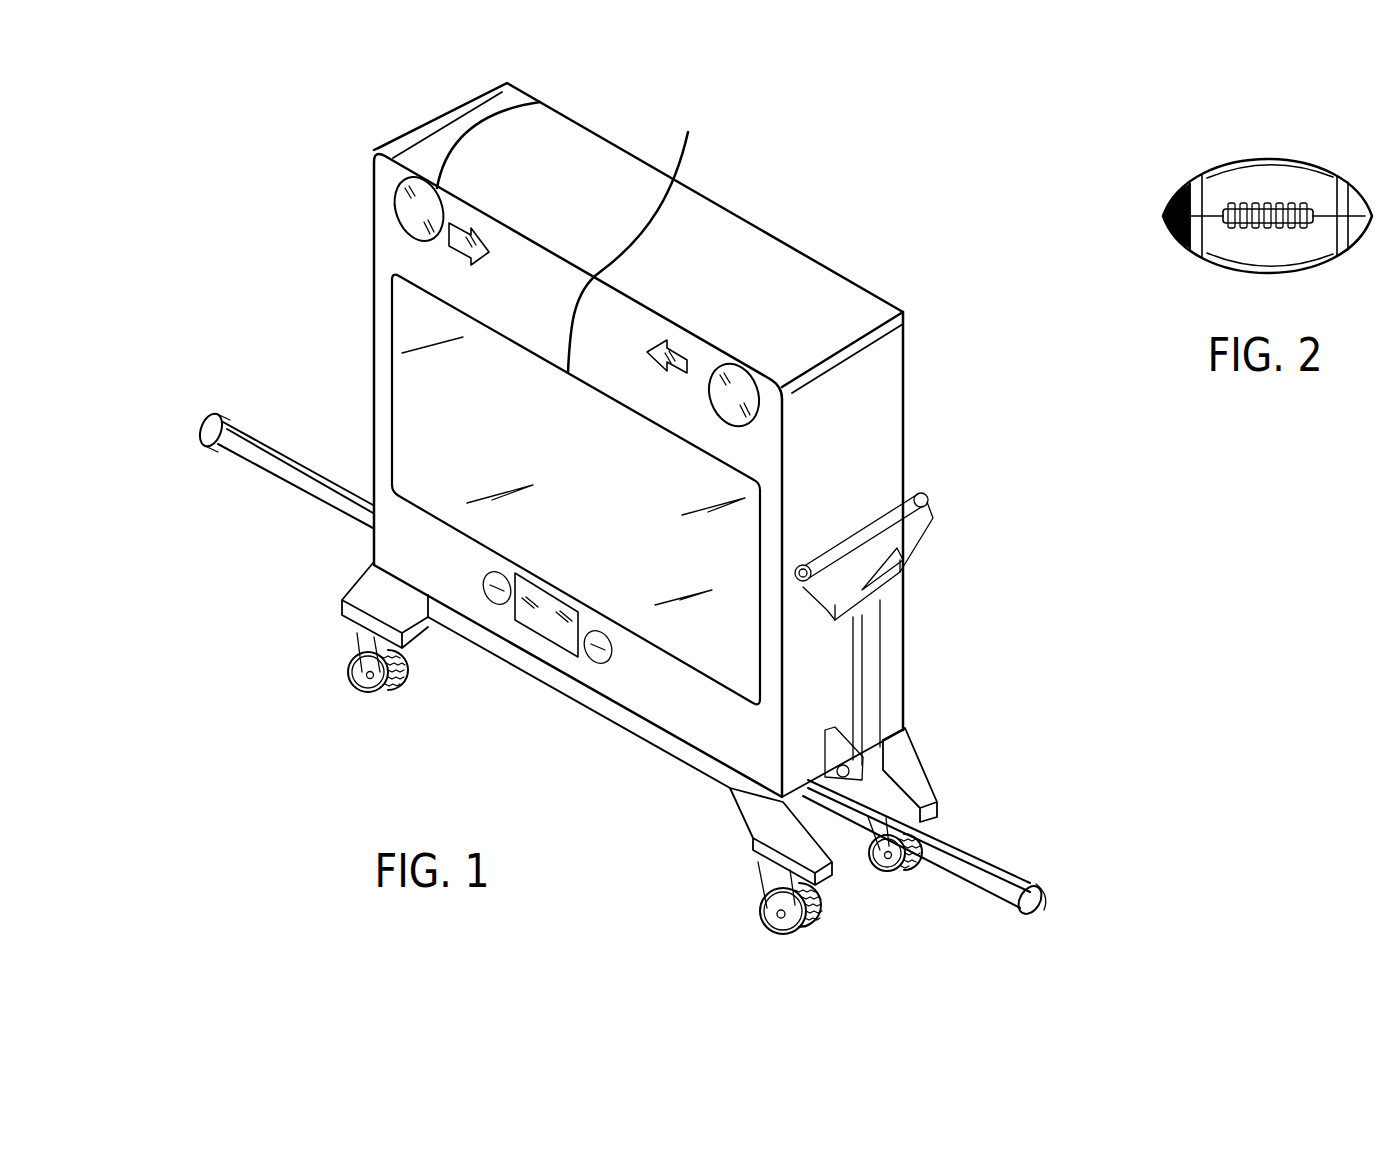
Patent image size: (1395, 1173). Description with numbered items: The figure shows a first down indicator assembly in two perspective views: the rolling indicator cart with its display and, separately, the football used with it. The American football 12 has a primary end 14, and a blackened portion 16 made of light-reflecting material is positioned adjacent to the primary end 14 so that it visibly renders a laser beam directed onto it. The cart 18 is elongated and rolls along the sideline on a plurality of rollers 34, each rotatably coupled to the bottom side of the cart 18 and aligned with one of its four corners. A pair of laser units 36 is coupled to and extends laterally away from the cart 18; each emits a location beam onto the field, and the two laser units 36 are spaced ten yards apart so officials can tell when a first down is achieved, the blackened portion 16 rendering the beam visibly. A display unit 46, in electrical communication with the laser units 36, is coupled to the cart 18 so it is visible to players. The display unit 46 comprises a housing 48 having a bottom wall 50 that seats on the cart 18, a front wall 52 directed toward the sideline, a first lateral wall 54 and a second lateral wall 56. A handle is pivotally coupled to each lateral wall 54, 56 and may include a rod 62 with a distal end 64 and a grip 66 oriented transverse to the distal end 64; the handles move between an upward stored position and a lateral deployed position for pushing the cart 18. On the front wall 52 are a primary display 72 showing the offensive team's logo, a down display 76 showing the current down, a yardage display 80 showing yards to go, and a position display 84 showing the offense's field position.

In FIG. 2, the American football 12 is at (1322, 164).
In FIG. 2, the primary end 14 is at (1165, 222).
In FIG. 2, the blackened portion 16 is at (1177, 165).
In FIG. 1, the cart 18 is at (705, 822).
In FIG. 1, the rollers 34 is at (387, 700).
In FIG. 1, the laser units 36 is at (284, 405).
In FIG. 1, the display unit 46 is at (753, 177).
In FIG. 1, the housing 48 is at (414, 137).
In FIG. 1, the bottom wall 50 is at (613, 712).
In FIG. 1, the front wall 52 is at (407, 535).
In FIG. 1, the first lateral wall 54 is at (382, 142).
In FIG. 1, the second lateral wall 56 is at (868, 400).
In FIG. 1, the rod 62 is at (868, 665).
In FIG. 1, the distal end 64 is at (890, 550).
In FIG. 1, the grip 66 is at (928, 492).
In FIG. 1, the primary display 72 is at (636, 233).
In FIG. 1, the down display 76 is at (540, 102).
In FIG. 1, the yardage display 80 is at (738, 366).
In FIG. 1, the position display 84 is at (553, 662).